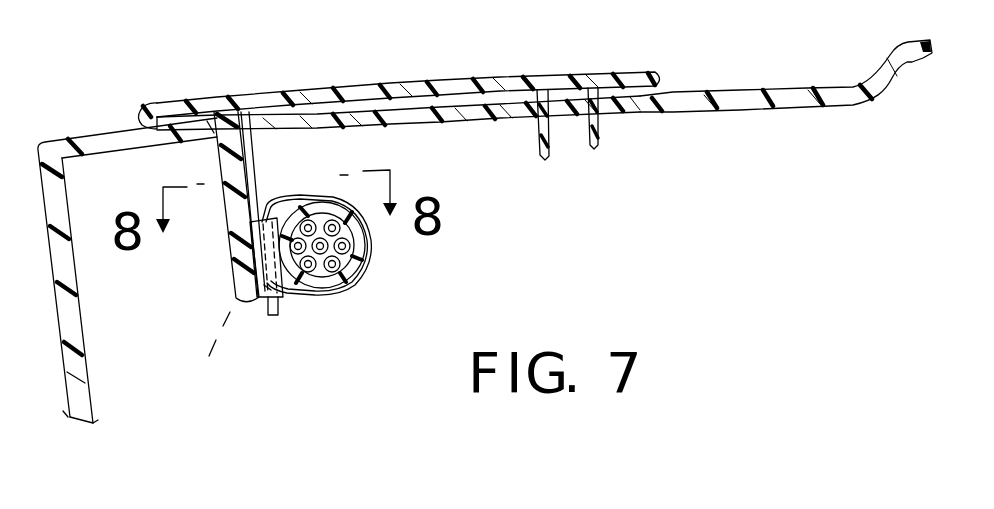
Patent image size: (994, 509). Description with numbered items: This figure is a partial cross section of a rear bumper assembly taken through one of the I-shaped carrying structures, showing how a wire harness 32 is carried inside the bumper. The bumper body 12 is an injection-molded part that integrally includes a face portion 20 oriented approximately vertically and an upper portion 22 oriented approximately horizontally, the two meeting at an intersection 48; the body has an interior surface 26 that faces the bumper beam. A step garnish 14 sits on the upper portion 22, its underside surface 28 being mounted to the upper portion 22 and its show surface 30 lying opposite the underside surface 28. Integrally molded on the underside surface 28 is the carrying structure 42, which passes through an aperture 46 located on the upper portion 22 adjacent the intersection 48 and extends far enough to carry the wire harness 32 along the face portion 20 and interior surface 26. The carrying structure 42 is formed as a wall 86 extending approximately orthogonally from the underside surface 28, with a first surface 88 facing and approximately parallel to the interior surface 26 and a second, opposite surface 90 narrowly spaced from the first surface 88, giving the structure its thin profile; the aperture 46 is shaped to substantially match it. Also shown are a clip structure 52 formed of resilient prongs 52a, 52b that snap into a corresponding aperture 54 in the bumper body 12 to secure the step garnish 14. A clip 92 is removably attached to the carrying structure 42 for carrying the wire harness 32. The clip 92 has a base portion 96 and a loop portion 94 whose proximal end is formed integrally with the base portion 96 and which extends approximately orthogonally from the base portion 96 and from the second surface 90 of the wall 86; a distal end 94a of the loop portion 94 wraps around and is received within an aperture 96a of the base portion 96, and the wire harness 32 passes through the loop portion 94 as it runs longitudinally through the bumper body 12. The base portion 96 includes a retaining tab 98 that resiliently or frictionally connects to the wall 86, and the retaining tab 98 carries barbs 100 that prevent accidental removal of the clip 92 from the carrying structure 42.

The bumper body 12 is at (66, 421).
The step garnish 14 is at (399, 72).
The face portion 20 is at (78, 373).
The upper portion 22 is at (730, 107).
The interior surface 26 is at (78, 330).
The underside surface 28 is at (457, 97).
The show surface 30 is at (418, 83).
The wire harness 32 is at (290, 321).
The carrying structure 42 is at (213, 168).
The aperture 46 is at (192, 162).
The intersection 48 is at (68, 163).
The clip structure 52 is at (577, 157).
The resilient prong 52a is at (534, 131).
The resilient prong 52b is at (603, 132).
The aperture 54 is at (571, 107).
The wall 86 is at (241, 170).
The first surface 88 is at (233, 188).
The second surface 90 is at (250, 188).
The clip 92 is at (295, 302).
The loop portion 94 is at (370, 250).
The distal end 94a is at (270, 317).
The base portion 96 is at (287, 305).
The aperture 96a is at (210, 352).
The retaining tab 98 is at (230, 247).
The barbs 100 is at (228, 233).